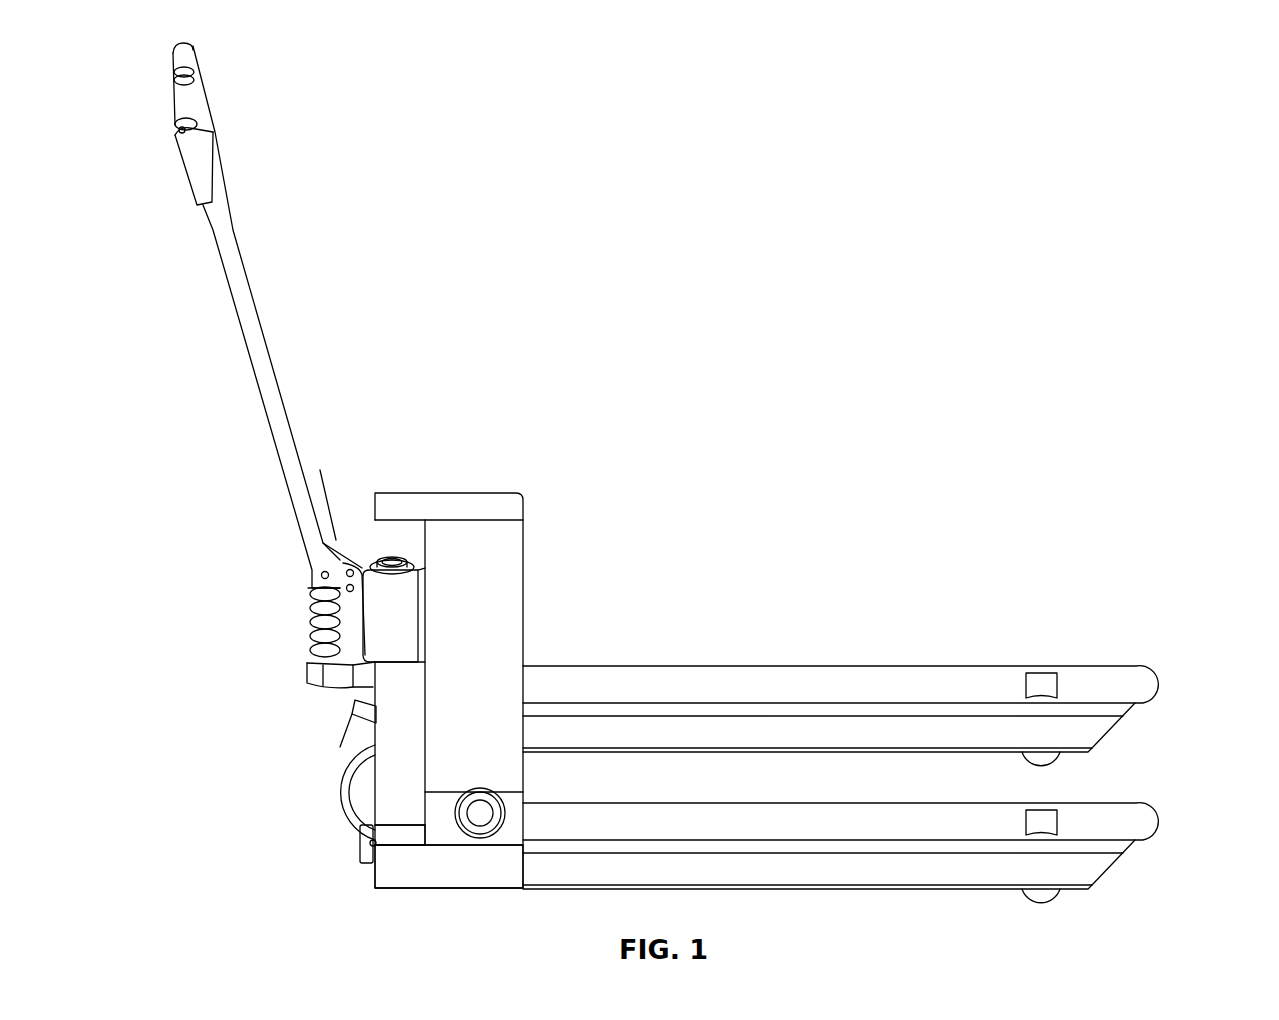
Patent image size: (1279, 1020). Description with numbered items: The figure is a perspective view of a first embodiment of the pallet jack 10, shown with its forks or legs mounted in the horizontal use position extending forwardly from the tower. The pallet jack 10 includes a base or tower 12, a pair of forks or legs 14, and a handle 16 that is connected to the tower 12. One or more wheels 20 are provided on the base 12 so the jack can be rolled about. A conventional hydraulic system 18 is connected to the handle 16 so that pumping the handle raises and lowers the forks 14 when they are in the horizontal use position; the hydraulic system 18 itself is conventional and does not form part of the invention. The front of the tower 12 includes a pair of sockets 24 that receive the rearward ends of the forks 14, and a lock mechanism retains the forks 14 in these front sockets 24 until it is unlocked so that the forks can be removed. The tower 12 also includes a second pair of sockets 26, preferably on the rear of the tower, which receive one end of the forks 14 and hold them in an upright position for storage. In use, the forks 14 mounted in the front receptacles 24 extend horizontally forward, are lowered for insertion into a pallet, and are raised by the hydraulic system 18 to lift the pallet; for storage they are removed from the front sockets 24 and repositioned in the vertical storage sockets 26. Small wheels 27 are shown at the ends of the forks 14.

The pallet jack 10 is at (878, 404).
The base or tower 12 is at (525, 565).
The forks or legs 14 is at (1147, 703).
The handle 16 is at (240, 250).
The hydraulic system 18 is at (395, 615).
The wheels 20 is at (353, 745).
The sockets 24 is at (460, 860).
The second pair of sockets 26 is at (420, 808).
The load wheels 27 is at (1040, 762).